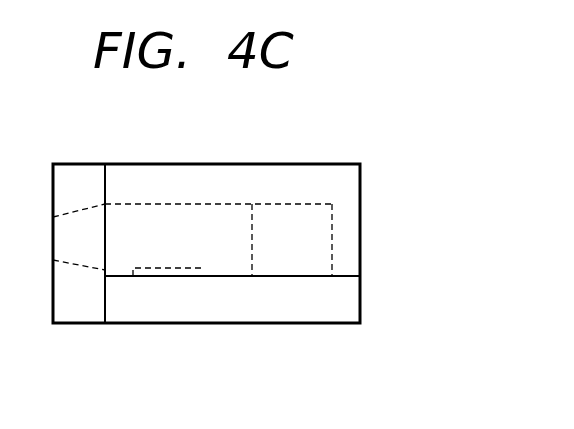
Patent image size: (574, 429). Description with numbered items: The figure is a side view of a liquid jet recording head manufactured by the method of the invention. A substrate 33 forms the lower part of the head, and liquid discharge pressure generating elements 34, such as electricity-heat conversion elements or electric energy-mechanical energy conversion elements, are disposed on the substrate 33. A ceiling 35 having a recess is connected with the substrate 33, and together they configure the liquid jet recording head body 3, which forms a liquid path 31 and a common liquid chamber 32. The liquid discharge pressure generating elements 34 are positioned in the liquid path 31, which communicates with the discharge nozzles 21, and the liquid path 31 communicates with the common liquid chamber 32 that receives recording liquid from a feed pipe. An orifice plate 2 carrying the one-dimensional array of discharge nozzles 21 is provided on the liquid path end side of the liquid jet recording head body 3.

The liquid jet recording head body 3 is at (325, 164).
The orifice plate 2 is at (78, 175).
The discharge nozzles 21 is at (78, 255).
The ceiling 35 is at (148, 173).
The liquid path 31 is at (207, 200).
The common liquid chamber 32 is at (282, 205).
The liquid discharge pressure generating elements 34 is at (150, 278).
The substrate 33 is at (290, 313).